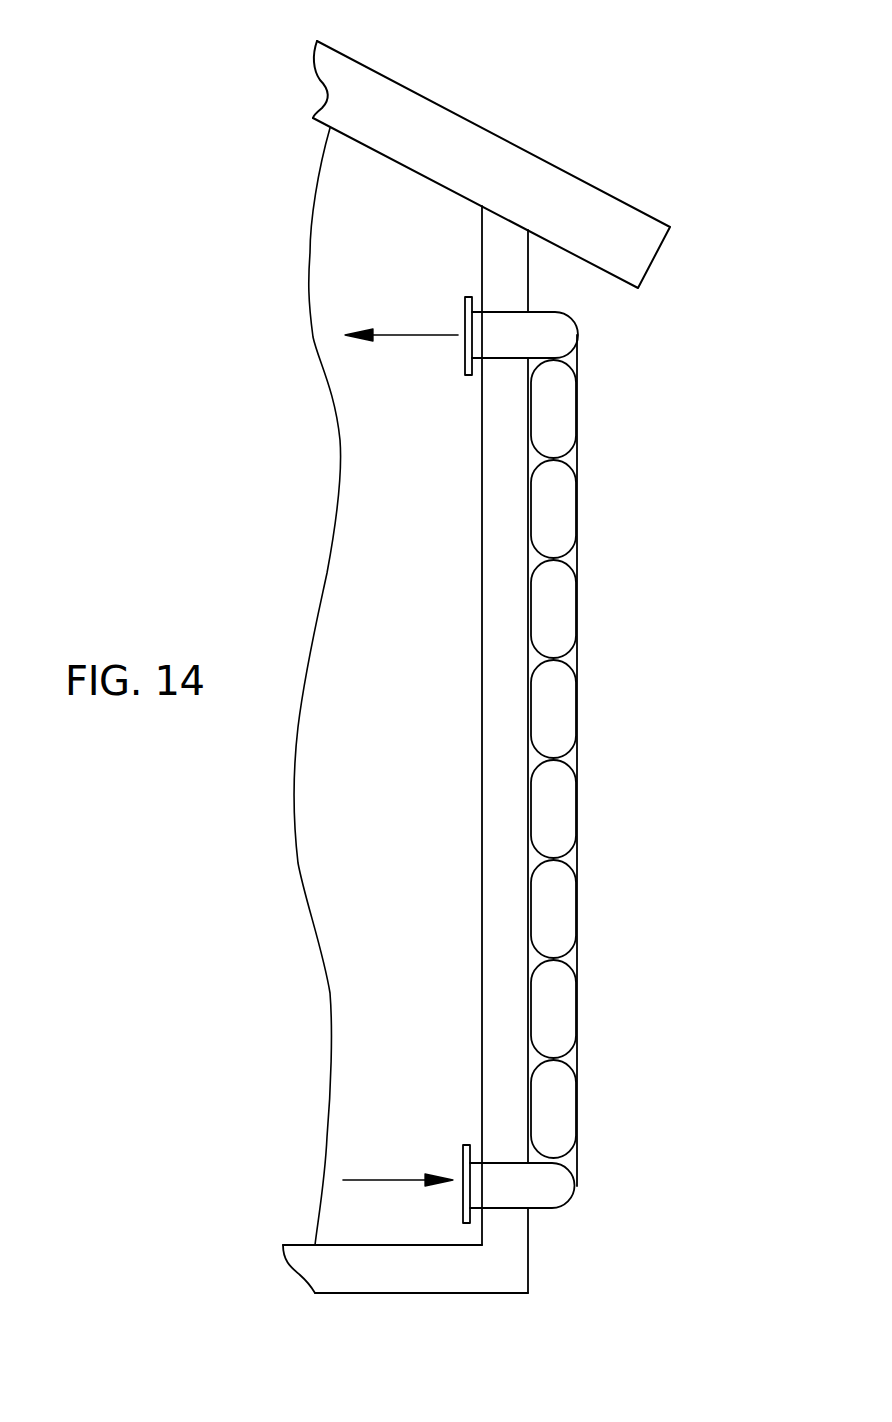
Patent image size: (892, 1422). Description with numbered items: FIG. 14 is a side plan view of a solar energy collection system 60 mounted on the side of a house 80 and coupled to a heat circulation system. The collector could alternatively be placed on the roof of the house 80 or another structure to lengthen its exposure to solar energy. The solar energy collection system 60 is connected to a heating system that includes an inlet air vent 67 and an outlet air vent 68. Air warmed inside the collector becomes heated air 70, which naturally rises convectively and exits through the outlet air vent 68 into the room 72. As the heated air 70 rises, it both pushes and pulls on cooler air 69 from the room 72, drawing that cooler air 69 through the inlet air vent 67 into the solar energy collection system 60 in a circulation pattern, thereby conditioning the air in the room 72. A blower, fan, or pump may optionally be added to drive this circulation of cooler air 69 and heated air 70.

The house 80 is at (472, 155).
The room 72 is at (407, 690).
The solar energy collection system 60 is at (578, 705).
The outlet air vent 68 is at (463, 305).
The heated air 70 is at (401, 350).
The inlet air vent 67 is at (460, 1146).
The cooler air 69 is at (398, 1197).